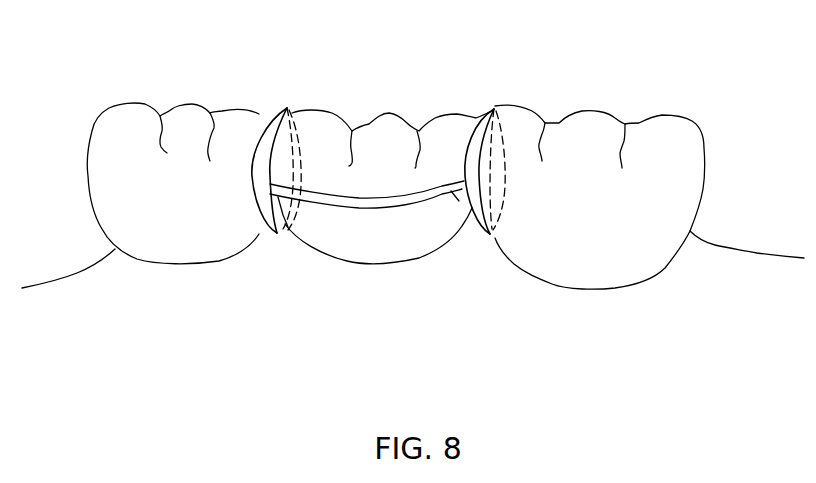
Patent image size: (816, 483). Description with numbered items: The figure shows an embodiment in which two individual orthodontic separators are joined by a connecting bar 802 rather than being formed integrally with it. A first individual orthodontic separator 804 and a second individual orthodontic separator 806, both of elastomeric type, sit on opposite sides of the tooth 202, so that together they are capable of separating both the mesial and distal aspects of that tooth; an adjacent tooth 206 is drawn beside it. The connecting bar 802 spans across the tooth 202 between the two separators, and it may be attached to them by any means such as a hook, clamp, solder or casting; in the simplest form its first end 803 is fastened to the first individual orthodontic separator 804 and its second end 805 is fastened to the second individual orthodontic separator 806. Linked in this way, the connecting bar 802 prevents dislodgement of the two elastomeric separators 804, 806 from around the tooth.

The adjacent tooth 206 is at (82, 158).
The connecting bar 802 is at (395, 117).
The tooth 202 is at (362, 263).
The first individual orthodontic separator 804 is at (281, 108).
The second individual orthodontic separator 806 is at (485, 112).
The first end 803 is at (285, 213).
The second end 805 is at (450, 197).